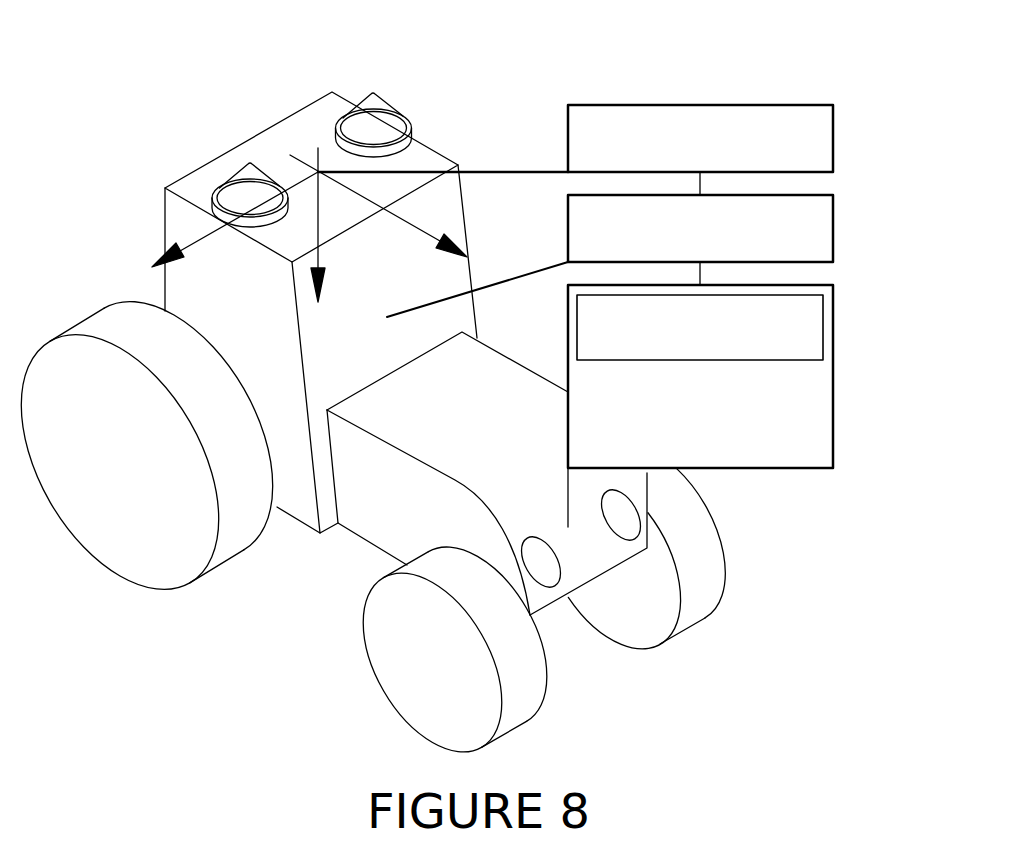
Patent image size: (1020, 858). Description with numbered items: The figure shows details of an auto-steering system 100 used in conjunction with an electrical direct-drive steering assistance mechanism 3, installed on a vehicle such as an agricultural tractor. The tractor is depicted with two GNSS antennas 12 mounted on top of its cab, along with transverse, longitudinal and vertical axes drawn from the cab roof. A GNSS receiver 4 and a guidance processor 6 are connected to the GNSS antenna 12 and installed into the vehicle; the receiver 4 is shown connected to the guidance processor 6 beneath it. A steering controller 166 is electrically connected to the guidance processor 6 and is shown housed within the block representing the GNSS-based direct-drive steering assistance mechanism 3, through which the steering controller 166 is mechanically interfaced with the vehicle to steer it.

The auto-steering system 100 is at (218, 83).
The GNSS antenna 12 is at (373, 91).
The GNSS receiver 4 is at (836, 141).
The guidance processor 6 is at (836, 231).
The steering controller 166 is at (825, 328).
The electrical direct-drive steering assistance mechanism 3 is at (836, 381).